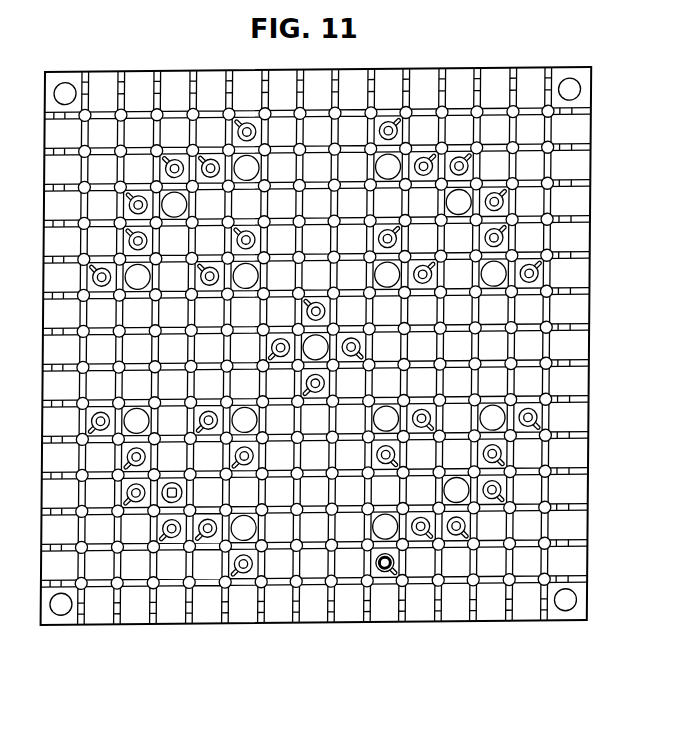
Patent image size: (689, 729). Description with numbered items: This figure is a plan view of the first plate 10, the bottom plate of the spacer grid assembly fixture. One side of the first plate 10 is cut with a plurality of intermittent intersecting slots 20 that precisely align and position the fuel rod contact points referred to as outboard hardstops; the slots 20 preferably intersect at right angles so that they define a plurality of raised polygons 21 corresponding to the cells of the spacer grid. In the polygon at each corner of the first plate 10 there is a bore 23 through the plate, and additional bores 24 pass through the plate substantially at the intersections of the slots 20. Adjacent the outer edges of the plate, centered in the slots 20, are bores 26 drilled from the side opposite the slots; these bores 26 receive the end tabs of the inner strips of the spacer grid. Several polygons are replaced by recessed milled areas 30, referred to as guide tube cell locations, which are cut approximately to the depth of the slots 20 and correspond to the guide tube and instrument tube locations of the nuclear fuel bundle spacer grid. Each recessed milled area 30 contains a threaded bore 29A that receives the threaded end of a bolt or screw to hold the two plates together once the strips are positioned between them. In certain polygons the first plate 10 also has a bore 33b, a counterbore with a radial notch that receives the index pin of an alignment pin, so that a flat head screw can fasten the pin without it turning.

The first plate 10 is at (463, 33).
The intermittent intersecting slots 20 is at (331, 623).
The raised polygons 21 is at (203, 606).
The bore 23 is at (62, 612).
The bore 24 is at (291, 586).
The bores 26 is at (152, 608).
The bore 29A is at (266, 513).
The recessed milled areas 30 is at (377, 514).
The bore 33b is at (388, 558).